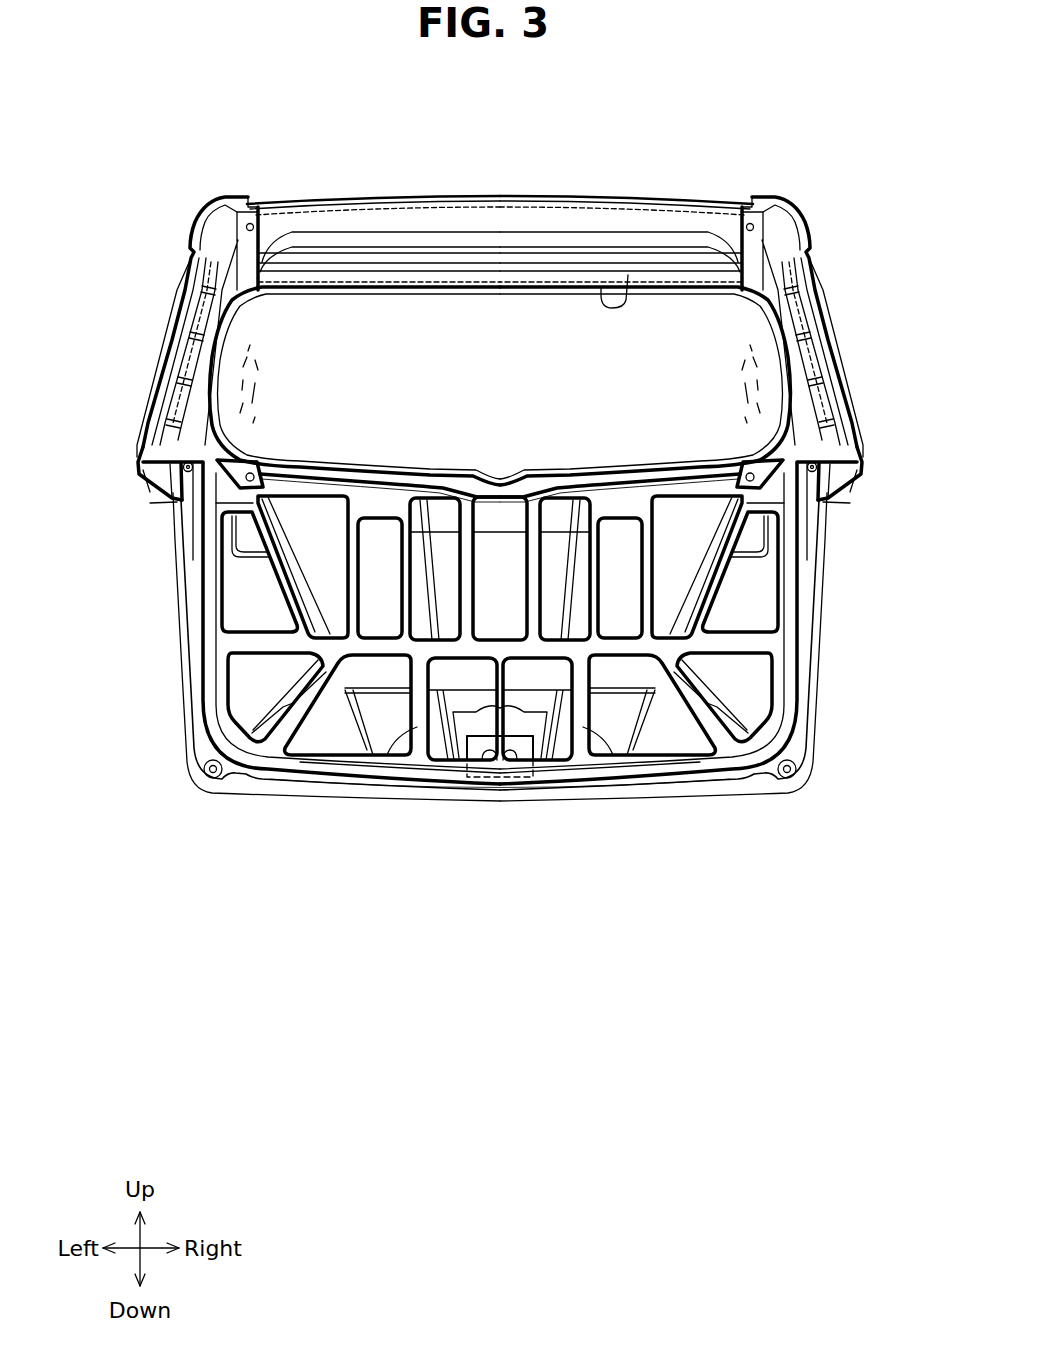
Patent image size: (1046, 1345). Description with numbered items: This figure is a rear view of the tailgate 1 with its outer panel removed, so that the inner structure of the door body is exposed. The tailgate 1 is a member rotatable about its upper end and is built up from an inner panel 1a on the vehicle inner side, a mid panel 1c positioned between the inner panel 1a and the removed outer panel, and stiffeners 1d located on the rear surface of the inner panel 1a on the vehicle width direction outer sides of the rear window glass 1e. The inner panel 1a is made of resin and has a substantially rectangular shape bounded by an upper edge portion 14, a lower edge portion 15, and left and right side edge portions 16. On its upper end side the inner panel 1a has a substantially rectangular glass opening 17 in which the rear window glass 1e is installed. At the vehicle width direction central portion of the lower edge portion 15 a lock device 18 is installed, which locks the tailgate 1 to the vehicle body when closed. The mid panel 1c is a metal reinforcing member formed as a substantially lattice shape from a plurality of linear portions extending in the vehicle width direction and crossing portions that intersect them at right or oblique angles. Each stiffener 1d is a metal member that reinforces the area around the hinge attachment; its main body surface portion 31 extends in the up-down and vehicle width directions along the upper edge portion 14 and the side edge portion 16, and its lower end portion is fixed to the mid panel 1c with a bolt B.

The tailgate 1 is at (672, 184).
The inner panel 1a is at (502, 198).
The mid panel 1c is at (417, 727).
The stiffener 1d is at (180, 337).
The rear window glass 1e is at (577, 311).
The upper edge portion 14 is at (437, 222).
The lower edge portion 15 is at (480, 797).
The side edge portion 16 is at (200, 408).
The glass opening 17 is at (628, 275).
The lock device 18 is at (523, 757).
The main body surface portion 31 is at (150, 425).
The bolt B is at (150, 503).